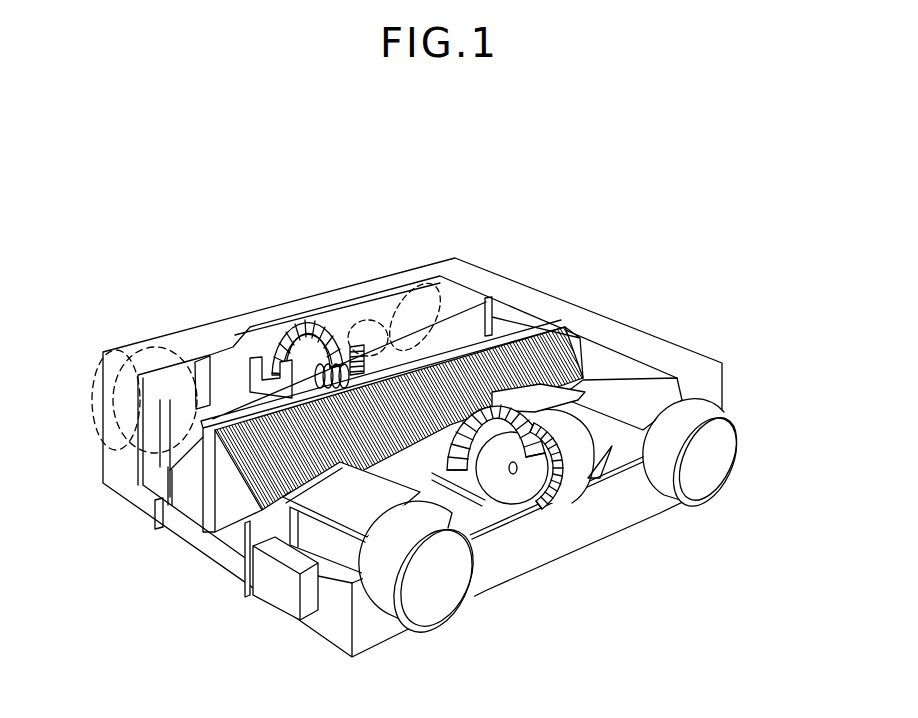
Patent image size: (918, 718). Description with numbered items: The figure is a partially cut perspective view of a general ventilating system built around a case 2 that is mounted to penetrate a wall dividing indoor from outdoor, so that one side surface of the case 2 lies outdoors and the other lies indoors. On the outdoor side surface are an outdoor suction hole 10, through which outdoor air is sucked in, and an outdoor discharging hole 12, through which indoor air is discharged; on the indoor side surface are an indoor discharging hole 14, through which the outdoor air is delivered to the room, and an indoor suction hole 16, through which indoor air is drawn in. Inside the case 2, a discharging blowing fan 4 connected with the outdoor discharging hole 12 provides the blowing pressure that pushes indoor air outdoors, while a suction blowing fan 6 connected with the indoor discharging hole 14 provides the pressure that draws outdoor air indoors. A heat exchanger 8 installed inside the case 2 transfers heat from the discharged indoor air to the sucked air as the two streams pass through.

The case 2 is at (670, 352).
The discharging blowing fan 4 is at (284, 346).
The suction blowing fan 6 is at (527, 472).
The heat exchanger 8 is at (546, 350).
The outdoor suction hole 10 is at (97, 398).
The outdoor discharging hole 12 is at (385, 322).
The indoor discharging hole 14 is at (478, 558).
The indoor suction hole 16 is at (720, 443).